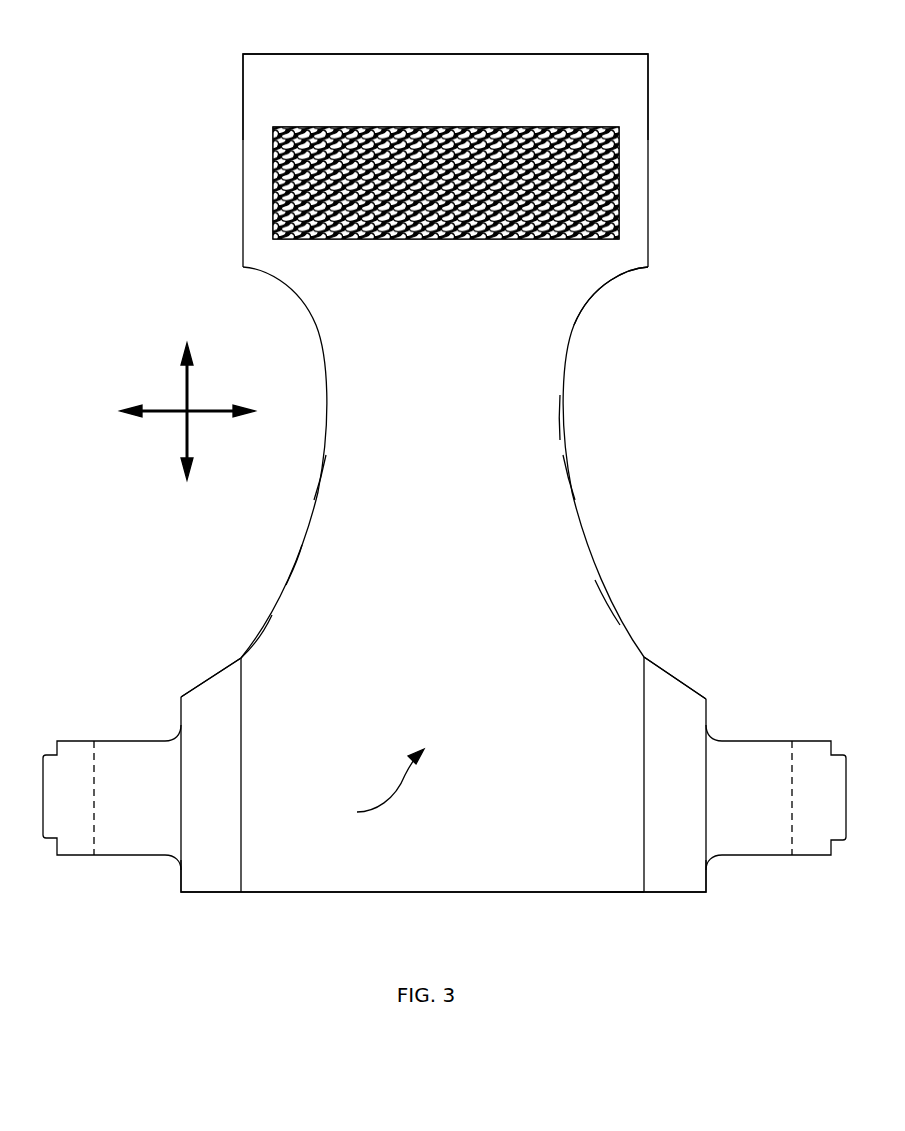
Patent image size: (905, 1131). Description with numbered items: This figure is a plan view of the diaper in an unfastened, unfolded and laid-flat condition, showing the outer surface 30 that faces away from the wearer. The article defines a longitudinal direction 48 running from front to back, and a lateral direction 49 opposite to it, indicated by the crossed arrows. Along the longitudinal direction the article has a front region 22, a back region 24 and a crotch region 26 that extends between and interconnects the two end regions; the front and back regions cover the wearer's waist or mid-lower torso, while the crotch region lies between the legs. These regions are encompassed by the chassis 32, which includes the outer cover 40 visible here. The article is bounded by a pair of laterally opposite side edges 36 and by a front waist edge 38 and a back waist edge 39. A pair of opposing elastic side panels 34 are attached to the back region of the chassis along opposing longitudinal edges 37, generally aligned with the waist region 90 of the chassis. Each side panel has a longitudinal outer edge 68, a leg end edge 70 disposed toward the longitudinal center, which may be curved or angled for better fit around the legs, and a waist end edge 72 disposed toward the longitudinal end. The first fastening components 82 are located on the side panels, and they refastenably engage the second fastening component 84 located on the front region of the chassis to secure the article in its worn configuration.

The front region 22 is at (543, 304).
The back region 24 is at (584, 600).
The crotch region 26 is at (543, 428).
The outer surface 30 is at (427, 405).
The chassis 32 is at (322, 562).
The elastic side panels 34 is at (202, 882).
The side edges 36 is at (567, 474).
The longitudinal edges 37 is at (243, 768).
The front waist edge 38 is at (293, 54).
The back waist edge 39 is at (315, 893).
The outer cover 40 is at (278, 657).
The longitudinal direction 48 is at (195, 378).
The lateral direction 49 is at (205, 412).
The longitudinal outer edge 68 is at (181, 786).
The leg end edge 70 is at (212, 708).
The waist end edges 72 is at (657, 895).
The first fastening components 82 is at (73, 843).
The second fastening component 84 is at (483, 225).
The waist region 90 is at (374, 787).